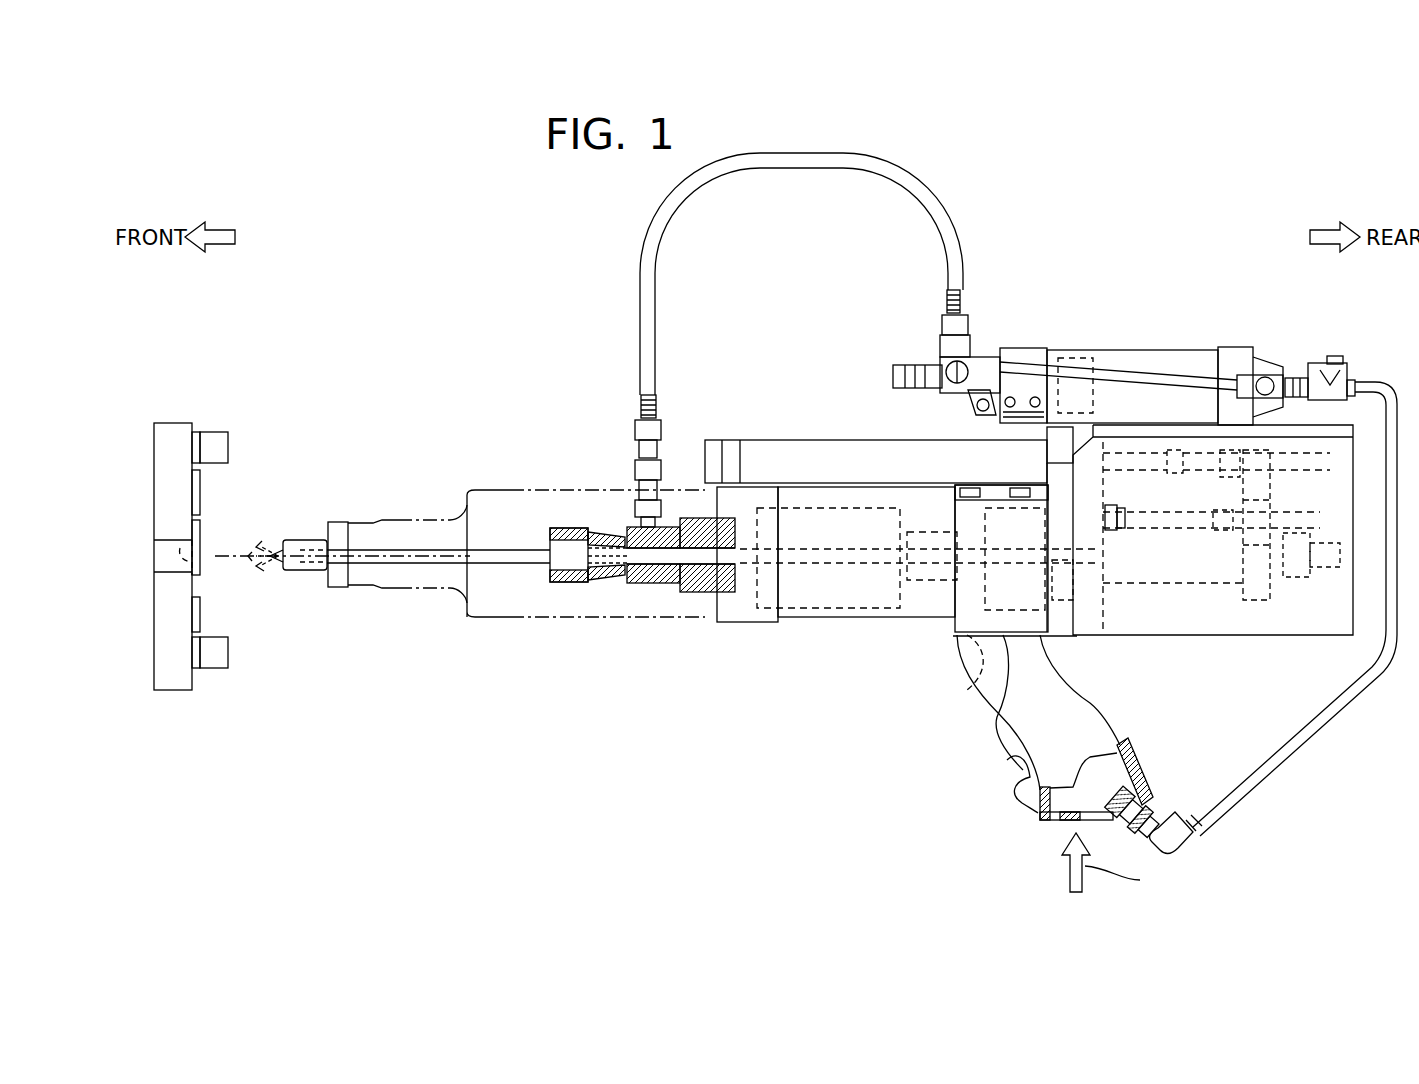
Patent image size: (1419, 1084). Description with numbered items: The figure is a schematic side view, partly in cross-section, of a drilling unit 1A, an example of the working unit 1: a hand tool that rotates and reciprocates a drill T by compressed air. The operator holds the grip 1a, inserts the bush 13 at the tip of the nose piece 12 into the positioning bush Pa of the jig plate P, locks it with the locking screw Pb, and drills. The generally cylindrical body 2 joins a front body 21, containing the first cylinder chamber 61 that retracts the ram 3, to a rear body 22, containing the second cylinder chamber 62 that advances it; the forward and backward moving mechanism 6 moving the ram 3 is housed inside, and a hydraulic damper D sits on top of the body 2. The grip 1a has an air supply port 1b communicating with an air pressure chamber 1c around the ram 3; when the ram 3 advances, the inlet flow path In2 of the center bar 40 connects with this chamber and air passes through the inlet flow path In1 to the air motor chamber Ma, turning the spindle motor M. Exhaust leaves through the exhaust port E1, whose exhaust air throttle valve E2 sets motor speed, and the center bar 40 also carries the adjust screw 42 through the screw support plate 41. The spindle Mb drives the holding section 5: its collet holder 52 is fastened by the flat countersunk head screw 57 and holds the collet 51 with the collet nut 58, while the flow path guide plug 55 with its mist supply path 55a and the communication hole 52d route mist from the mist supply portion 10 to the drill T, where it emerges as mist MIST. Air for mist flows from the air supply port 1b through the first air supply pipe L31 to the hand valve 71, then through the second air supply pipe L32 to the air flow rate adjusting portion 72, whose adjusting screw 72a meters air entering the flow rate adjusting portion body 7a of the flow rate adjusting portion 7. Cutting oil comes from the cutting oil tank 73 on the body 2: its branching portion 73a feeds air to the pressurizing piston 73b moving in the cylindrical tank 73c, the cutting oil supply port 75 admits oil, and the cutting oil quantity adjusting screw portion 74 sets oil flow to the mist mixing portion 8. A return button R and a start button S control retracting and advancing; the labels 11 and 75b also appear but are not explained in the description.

The working unit 1 is at (373, 189).
The drilling unit 1A is at (512, 178).
The grip 1a is at (1030, 815).
The air supply port 1b is at (1063, 822).
The air pressure chamber 1c is at (1008, 714).
The body 2 is at (904, 624).
The ram 3 is at (717, 595).
The holding section 5 is at (576, 518).
The forward and backward moving mechanism 6 is at (824, 618).
The flow rate adjusting portion 7 is at (934, 342).
The flow rate adjusting portion body 7a is at (938, 370).
The mist mixing portion 8 is at (633, 470).
The mist supply portion 10 is at (1072, 243).
The hose 11 is at (826, 152).
The nose piece 12 is at (467, 490).
The bush 13 is at (313, 540).
The front body 21 is at (838, 616).
The rear body 22 is at (1030, 636).
The center bar 40 is at (1200, 588).
The screw support plate 41 is at (1270, 480).
The adjust screw 42 is at (1227, 476).
The collet 51 is at (592, 587).
The collet holder 52 is at (630, 527).
The communication hole 52d is at (657, 590).
The flow path guide plug 55 is at (633, 587).
The mist supply path 55a is at (640, 590).
The flat countersunk head screw 57 is at (681, 593).
The collet nut 58 is at (560, 587).
The first cylinder chamber 61 is at (874, 616).
The second cylinder chamber 62 is at (1080, 587).
The hand valve 71 is at (1336, 363).
The air flow rate adjusting portion 72 is at (940, 390).
The adjusting screw 72a is at (978, 398).
The cutting oil tank 73 is at (1125, 348).
The branching portion 73a is at (1266, 377).
The pressurizing piston 73b is at (1072, 358).
The cylindrical tank 73c is at (1160, 350).
The cutting oil quantity adjusting screw portion 74 is at (893, 378).
The cutting oil supply port 75 is at (960, 361).
The lever bracket 75b is at (1000, 370).
The hydraulic damper D is at (748, 438).
The exhaust port E1 is at (1297, 565).
The exhaust air throttle valve E2 is at (1340, 558).
The inlet flow path In1 is at (1015, 560).
The inlet flow path In2 is at (1140, 573).
The first air supply pipe L31 is at (1273, 763).
The second air supply pipe L32 is at (1196, 380).
The spindle motor M is at (927, 575).
The air motor chamber Ma is at (984, 680).
The spindle Mb is at (790, 565).
The mist MIST is at (273, 577).
The jig plate P is at (177, 420).
The positioning bush Pa is at (180, 548).
The locking screw Pb is at (200, 493).
The return button R is at (967, 486).
The start button S is at (1022, 486).
The drill T is at (309, 573).